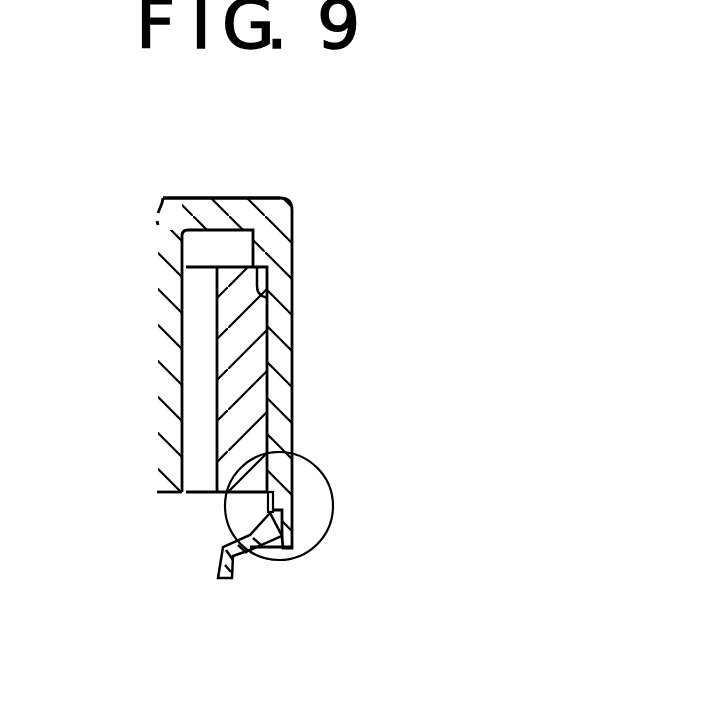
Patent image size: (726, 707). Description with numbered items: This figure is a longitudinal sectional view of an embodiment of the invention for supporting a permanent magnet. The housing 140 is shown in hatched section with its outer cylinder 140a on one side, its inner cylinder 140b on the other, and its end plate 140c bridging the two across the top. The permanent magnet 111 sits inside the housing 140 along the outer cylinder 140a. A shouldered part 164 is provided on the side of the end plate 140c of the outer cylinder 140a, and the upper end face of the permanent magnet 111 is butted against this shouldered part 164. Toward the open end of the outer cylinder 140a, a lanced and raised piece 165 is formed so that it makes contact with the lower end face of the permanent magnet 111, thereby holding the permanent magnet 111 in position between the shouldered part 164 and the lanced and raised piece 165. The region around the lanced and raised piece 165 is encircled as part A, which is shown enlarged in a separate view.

The housing 140 is at (285, 200).
The outer cylinder 140a is at (282, 397).
The inner cylinder 140b is at (170, 256).
The end plate 140c is at (205, 198).
The permanent magnet 111 is at (245, 337).
The shouldered part 164 is at (262, 287).
The lanced and raised piece 165 is at (258, 524).
The part A is at (332, 495).